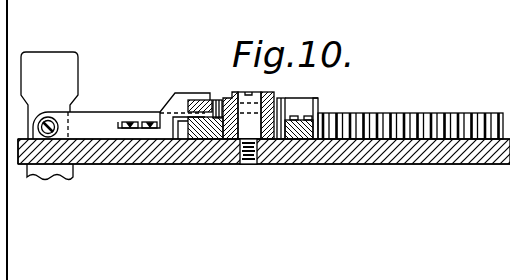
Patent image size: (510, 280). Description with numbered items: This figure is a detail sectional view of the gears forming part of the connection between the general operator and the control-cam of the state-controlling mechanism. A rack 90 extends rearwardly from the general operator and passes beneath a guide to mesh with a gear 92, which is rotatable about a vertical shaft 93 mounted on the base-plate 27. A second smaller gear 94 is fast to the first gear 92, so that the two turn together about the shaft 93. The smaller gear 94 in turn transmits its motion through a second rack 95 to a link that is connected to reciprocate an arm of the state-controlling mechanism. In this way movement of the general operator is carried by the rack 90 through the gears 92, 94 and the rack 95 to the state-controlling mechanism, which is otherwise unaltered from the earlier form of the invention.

The base-plate 27 is at (200, 165).
The rack 90 is at (121, 112).
The gear 92 is at (302, 118).
The vertical shaft 93 is at (248, 128).
The second smaller gear 94 is at (226, 99).
The rack 95 is at (205, 100).